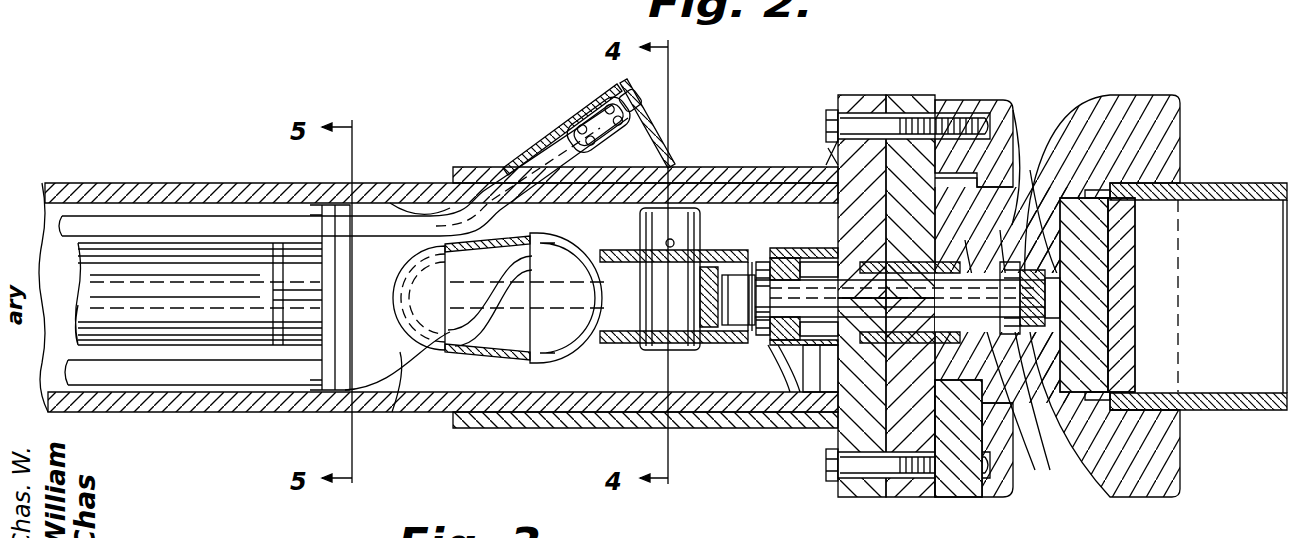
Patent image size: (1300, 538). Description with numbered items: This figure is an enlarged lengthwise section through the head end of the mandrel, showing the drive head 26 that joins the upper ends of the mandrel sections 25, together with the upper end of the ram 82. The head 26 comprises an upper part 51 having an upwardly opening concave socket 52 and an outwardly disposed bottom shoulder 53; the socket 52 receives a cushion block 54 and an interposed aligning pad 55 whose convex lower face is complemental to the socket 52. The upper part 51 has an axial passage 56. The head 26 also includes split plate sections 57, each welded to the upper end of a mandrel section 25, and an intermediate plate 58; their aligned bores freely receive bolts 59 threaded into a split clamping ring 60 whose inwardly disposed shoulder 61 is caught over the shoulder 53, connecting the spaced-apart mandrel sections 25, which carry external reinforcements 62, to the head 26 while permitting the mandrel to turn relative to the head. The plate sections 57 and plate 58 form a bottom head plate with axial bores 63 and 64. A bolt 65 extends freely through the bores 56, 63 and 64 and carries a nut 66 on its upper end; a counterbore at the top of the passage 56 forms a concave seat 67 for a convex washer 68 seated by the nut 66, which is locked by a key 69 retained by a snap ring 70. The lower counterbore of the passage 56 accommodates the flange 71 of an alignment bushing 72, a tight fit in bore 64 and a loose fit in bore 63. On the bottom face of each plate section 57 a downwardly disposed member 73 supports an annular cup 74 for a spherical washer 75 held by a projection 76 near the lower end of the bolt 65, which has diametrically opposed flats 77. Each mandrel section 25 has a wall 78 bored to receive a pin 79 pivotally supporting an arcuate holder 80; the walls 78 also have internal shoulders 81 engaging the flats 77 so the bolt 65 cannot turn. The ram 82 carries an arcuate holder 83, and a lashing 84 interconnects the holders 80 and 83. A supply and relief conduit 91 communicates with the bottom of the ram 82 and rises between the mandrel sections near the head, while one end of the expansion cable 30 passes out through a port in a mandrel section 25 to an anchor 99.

The mandrel section 25 is at (110, 183).
The drive head 26 is at (1080, 108).
The expansion cable 30 is at (450, 185).
The upper part 51 is at (1180, 467).
The socket 52 is at (1135, 372).
The bottom shoulder 53 is at (964, 497).
The cushion block 54 is at (1263, 410).
The aligning pad 55 is at (1098, 345).
The axial passage 56 is at (1020, 410).
The split plate section 57 is at (862, 95).
The intermediate plate 58 is at (913, 95).
The bolt 59 is at (959, 116).
The split clamping ring 60 is at (992, 100).
The inwardly disposed shoulder 61 is at (1018, 138).
The external reinforcement 62 is at (742, 167).
The axial bore 63 is at (840, 258).
The axial bore 64 is at (826, 175).
The bolt 65 is at (798, 255).
The nut 66 is at (1110, 320).
The concave seat 67 is at (1030, 170).
The convex washer 68 is at (1040, 420).
The key 69 is at (1140, 250).
The snap ring 70 is at (1130, 275).
The flange 71 is at (942, 497).
The alignment bushing 72 is at (838, 374).
The downwardly disposed member 73 is at (794, 392).
The annular cup 74 is at (774, 392).
The spherical washer 75 is at (756, 345).
The projection 76 is at (754, 265).
The flats 77 is at (718, 345).
The wall 78 is at (614, 250).
The pin 79 is at (656, 352).
The arcuate holder 80 is at (575, 354).
The internal shoulder 81 is at (738, 300).
The ram 82 is at (238, 345).
The arcuate holder 83 is at (392, 412).
The lashing 84 is at (491, 352).
The supply and relief conduit 91 is at (422, 412).
The anchor 99 is at (582, 98).